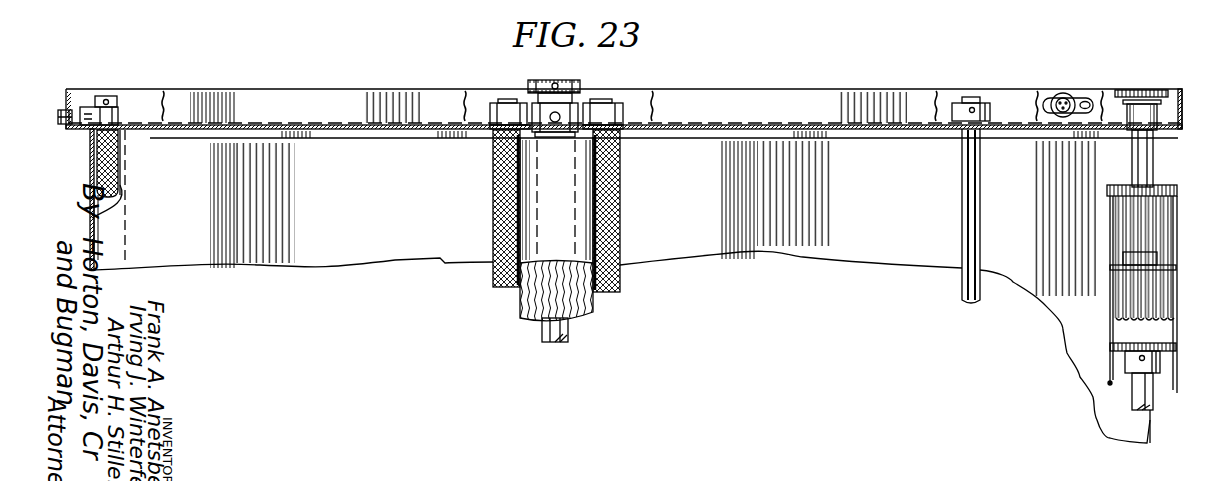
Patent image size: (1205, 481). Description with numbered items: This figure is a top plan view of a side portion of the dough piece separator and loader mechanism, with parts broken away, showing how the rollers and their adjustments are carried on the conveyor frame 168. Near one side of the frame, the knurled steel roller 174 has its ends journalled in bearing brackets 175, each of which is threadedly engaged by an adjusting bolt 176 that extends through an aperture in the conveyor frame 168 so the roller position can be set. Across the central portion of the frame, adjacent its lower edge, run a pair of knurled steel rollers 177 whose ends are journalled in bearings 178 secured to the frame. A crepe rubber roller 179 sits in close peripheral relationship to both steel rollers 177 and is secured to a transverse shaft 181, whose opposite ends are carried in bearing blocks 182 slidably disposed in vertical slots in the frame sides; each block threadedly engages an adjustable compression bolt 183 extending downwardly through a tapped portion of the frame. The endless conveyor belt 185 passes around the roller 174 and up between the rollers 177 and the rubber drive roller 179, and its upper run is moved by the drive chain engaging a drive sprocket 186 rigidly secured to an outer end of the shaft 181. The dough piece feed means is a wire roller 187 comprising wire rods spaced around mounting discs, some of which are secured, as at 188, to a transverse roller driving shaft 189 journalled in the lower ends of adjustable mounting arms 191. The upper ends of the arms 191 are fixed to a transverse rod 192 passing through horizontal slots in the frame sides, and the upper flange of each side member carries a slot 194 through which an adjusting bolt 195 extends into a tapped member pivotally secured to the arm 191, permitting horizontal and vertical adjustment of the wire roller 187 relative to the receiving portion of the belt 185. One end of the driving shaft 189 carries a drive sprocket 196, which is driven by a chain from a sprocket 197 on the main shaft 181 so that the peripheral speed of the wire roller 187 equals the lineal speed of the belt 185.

The conveyor frame 168 is at (298, 90).
The knurled steel roller 174 is at (120, 170).
The bearing bracket 175 is at (120, 118).
The adjusting bolt 176 is at (78, 113).
The knurled steel rollers 177 is at (493, 202).
The bearings 178 is at (483, 122).
The crepe rubber roller 179 is at (520, 315).
The transverse shaft 181 is at (567, 345).
The bearing block 182 is at (533, 106).
The adjustable compression bolt 183 is at (557, 134).
The endless conveyor belt 185 is at (803, 258).
The drive sprocket 186 is at (570, 80).
The wire roller 187 is at (1110, 308).
The securing point of mounting discs 188 is at (1128, 360).
The roller driving shaft 189 is at (1132, 393).
The adjustable mounting arm 191 is at (998, 121).
The transverse rod 192 is at (962, 215).
The slot 194 is at (1084, 98).
The adjusting bolt 195 is at (1065, 94).
The drive sprocket 196 is at (1150, 97).
The sprocket 197 is at (590, 93).